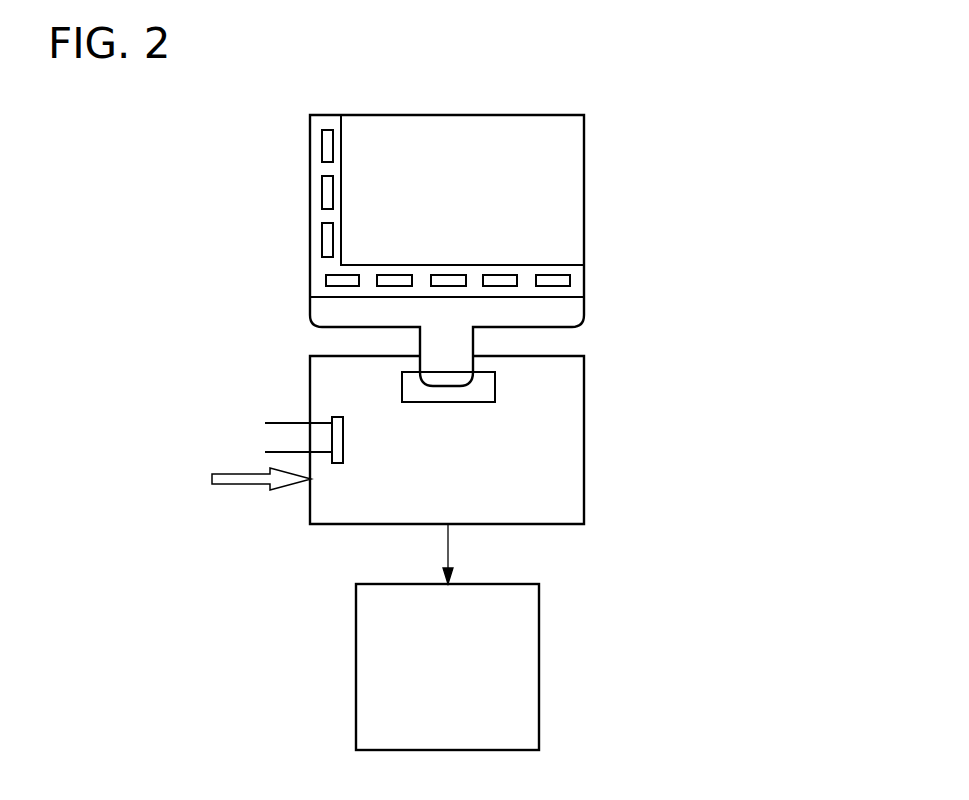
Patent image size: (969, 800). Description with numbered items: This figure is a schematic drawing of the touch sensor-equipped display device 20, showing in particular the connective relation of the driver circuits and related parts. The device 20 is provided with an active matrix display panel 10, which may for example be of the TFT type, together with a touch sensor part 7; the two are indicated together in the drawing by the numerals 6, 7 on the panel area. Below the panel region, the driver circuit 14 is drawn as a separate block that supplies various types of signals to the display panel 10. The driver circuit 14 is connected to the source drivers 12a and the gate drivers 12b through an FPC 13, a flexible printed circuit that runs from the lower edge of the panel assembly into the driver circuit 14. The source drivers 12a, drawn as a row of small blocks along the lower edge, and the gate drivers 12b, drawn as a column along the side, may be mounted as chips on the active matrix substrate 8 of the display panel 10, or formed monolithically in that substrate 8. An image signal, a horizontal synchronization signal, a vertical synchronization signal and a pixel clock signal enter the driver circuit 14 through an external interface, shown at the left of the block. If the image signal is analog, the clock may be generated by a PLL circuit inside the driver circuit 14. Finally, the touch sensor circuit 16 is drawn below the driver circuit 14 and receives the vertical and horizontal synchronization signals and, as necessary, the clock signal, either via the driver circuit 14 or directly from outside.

The touch panel 6 is at (462, 160).
The touch sensor part 7 is at (389, 137).
The active matrix substrate 8 is at (284, 199).
The display panel 10 is at (448, 221).
The source drivers 12a is at (568, 282).
The gate drivers 12b is at (328, 246).
The FPC 13 is at (582, 314).
The driver circuit 14 is at (585, 428).
The touch sensor circuit 16 is at (540, 658).
The touch sensor-equipped display device 20 is at (678, 122).